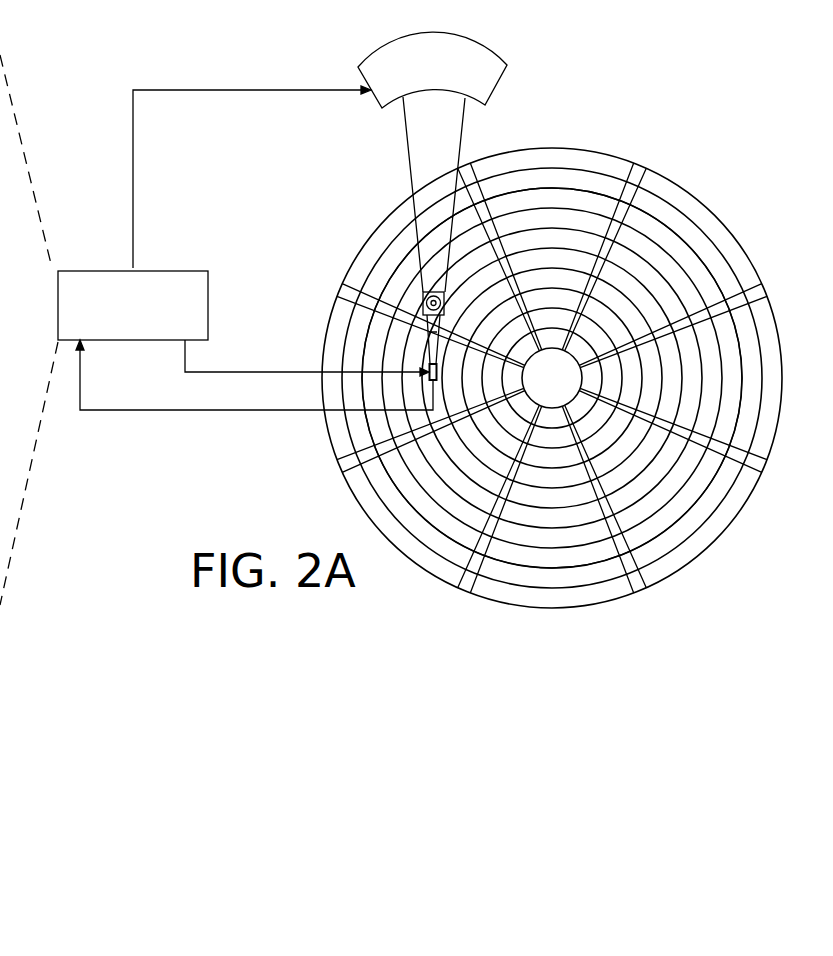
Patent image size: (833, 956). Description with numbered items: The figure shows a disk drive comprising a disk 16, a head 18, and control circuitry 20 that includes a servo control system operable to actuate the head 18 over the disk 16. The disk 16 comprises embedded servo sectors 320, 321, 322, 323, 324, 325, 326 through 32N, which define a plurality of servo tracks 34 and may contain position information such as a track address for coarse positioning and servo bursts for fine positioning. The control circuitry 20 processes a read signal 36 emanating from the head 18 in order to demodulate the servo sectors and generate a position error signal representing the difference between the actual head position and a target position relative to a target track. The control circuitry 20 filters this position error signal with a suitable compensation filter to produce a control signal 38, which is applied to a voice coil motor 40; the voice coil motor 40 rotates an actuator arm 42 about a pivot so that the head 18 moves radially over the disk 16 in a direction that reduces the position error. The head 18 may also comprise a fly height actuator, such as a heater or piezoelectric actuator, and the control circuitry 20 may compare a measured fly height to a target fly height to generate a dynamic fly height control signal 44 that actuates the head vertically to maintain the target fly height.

The disk 16 is at (712, 188).
The head 18 is at (441, 372).
The control circuitry 20 is at (172, 268).
The servo sector 32N is at (470, 172).
The servo sector 320 is at (642, 170).
The servo sector 321 is at (756, 294).
The servo sector 322 is at (758, 470).
The servo sector 323 is at (634, 582).
The servo sector 324 is at (462, 582).
The servo sector 325 is at (343, 464).
The servo sector 326 is at (344, 288).
The servo tracks 34 is at (556, 170).
The read signal 36 is at (237, 412).
The control signal 38 is at (133, 142).
The voice coil motor 40 is at (374, 97).
The actuator arm 42 is at (411, 180).
The dynamic fly height control signal 44 is at (216, 374).